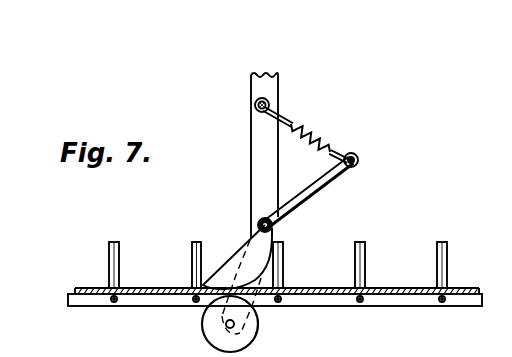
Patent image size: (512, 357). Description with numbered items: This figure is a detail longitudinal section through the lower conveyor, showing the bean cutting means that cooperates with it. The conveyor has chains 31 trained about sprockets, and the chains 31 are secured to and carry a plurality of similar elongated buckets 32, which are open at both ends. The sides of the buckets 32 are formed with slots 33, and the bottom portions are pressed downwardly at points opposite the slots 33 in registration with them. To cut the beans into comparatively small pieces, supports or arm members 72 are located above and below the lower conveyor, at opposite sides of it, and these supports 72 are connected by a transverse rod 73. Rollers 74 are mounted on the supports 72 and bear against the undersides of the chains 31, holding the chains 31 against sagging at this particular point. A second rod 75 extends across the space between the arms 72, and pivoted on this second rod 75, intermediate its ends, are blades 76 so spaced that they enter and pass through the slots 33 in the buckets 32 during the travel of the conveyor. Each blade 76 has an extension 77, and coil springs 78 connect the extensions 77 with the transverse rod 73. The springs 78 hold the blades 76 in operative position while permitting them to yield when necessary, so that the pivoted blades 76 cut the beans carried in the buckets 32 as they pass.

The chains 31 is at (408, 306).
The buckets 32 is at (119, 237).
The slots 33 is at (448, 242).
The supports or arm members 72 is at (258, 158).
The transverse rod 73 is at (271, 103).
The rollers 74 is at (250, 329).
The second rod 75 is at (258, 222).
The blades 76 is at (253, 261).
The extensions 77 is at (330, 176).
The coil springs 78 is at (318, 136).